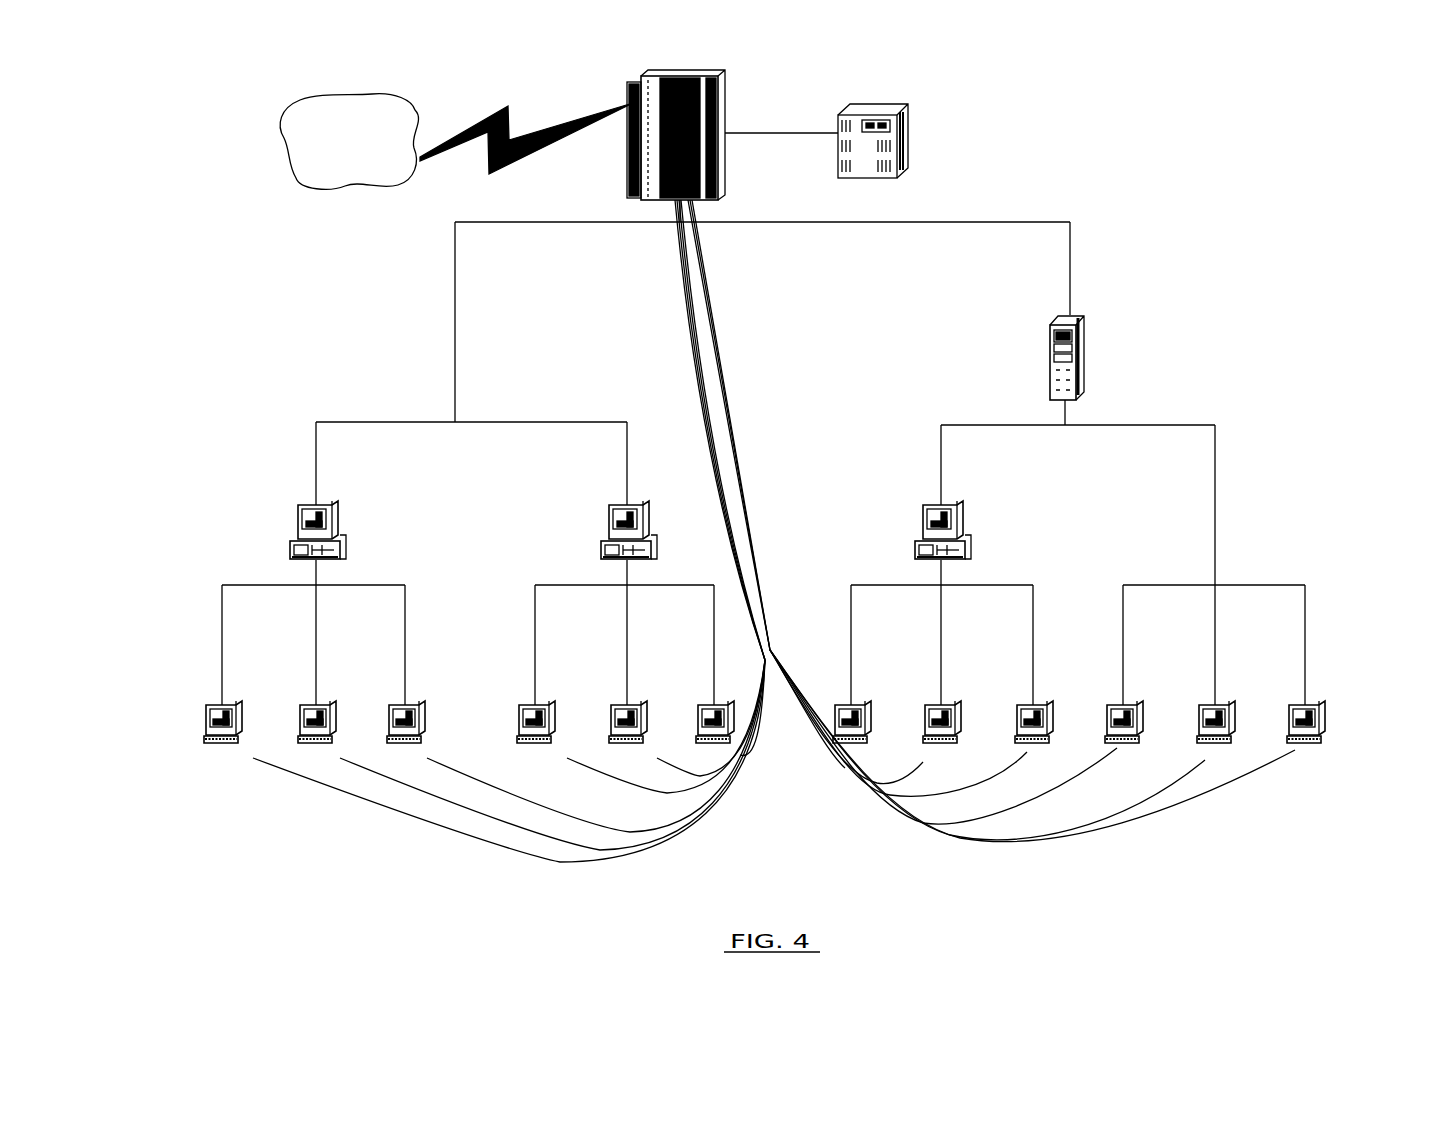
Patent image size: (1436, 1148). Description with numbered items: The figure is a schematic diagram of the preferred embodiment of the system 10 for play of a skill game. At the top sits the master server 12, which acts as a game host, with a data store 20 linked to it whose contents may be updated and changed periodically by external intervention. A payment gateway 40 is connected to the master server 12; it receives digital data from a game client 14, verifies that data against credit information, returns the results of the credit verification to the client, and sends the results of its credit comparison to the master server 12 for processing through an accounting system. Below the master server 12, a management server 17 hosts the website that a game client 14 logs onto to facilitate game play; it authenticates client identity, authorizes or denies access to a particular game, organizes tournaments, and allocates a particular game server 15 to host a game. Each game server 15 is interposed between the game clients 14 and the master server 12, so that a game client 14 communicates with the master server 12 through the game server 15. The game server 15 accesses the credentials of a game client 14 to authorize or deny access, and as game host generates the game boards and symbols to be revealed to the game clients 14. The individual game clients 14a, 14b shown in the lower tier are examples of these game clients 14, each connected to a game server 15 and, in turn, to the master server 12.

The system 10 is at (1219, 172).
The payment gateway 40 is at (372, 94).
The master server 12 is at (732, 140).
The data store 20 is at (908, 131).
The management server 17 is at (1086, 362).
The game server 15 is at (349, 529).
The game client 14 is at (1040, 706).
The game client 14a is at (418, 712).
The game client 14b is at (293, 722).